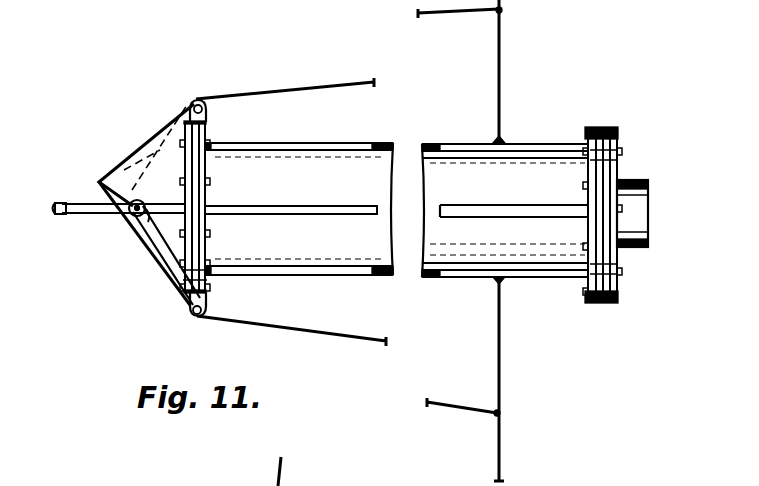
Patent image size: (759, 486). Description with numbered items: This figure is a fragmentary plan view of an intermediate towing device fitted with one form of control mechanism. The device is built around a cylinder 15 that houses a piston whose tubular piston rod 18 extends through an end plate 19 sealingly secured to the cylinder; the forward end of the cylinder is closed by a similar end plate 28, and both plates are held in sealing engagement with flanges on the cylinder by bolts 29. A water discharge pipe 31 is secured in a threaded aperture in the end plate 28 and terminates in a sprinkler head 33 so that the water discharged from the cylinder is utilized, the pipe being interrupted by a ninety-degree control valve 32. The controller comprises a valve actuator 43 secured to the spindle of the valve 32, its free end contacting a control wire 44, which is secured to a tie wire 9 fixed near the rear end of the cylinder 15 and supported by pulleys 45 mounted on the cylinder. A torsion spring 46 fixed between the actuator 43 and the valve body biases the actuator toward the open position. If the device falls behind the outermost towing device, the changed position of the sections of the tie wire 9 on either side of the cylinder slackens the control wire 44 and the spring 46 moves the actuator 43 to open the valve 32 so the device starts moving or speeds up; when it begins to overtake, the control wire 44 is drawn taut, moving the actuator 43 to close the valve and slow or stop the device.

The tie wire 9 is at (501, 56).
The cylinder 15 is at (554, 172).
The tubular piston rod 18 is at (636, 178).
The end plate 19 is at (593, 126).
The end plate 28 is at (203, 196).
The bolts 29 is at (457, 208).
The water discharge pipe 31 is at (83, 215).
The control valve 32 is at (126, 224).
The sprinkler head 33 is at (54, 216).
The valve actuator 43 is at (118, 181).
The control wire 44 is at (354, 80).
The pulleys 45 is at (196, 99).
The torsion spring 46 is at (150, 245).